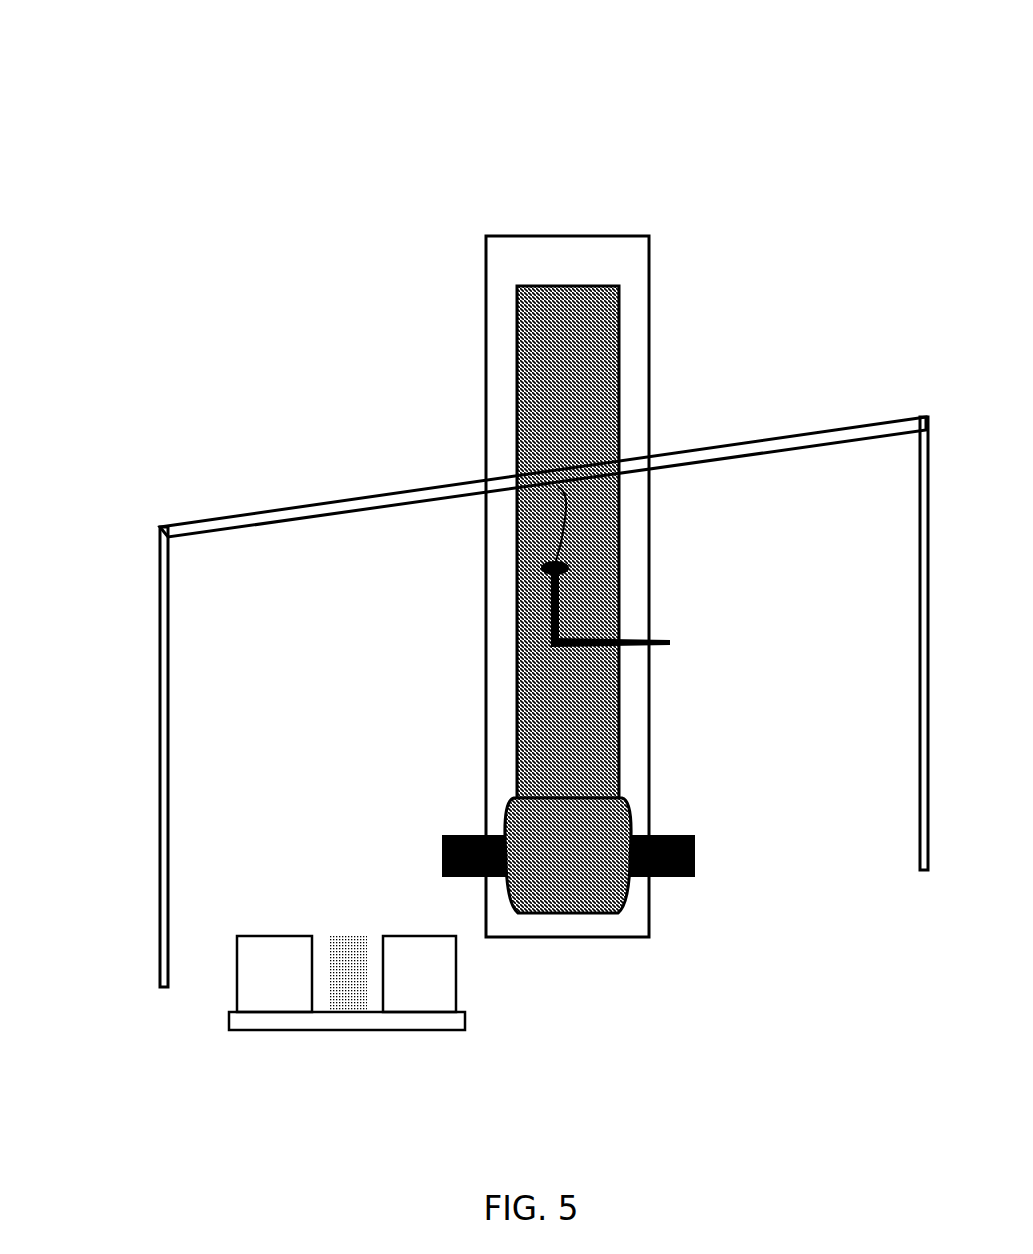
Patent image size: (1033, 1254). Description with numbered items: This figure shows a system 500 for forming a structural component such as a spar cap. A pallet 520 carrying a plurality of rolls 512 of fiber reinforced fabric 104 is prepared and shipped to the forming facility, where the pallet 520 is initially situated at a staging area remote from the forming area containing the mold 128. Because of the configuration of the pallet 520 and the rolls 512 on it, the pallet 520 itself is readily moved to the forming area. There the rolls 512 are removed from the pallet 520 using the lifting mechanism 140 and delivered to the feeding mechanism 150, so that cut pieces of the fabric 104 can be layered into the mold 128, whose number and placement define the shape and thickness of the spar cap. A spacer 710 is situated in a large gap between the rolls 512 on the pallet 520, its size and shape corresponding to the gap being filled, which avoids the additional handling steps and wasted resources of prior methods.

The system 500 is at (98, 132).
The fabric 104 is at (607, 337).
The mold 128 is at (485, 312).
The lifting mechanism 140 is at (157, 735).
The feeding mechanism 150 is at (695, 856).
The roll 512 is at (594, 868).
The pallet 520 is at (233, 1023).
The spacer 710 is at (347, 943).